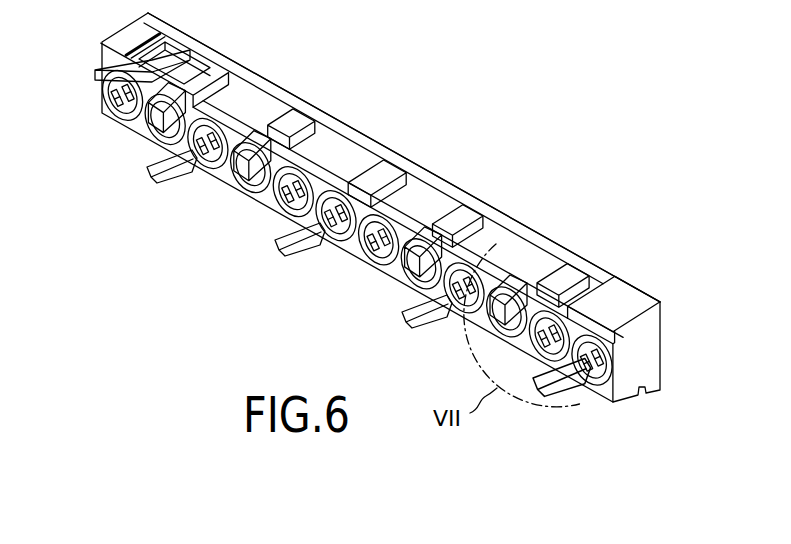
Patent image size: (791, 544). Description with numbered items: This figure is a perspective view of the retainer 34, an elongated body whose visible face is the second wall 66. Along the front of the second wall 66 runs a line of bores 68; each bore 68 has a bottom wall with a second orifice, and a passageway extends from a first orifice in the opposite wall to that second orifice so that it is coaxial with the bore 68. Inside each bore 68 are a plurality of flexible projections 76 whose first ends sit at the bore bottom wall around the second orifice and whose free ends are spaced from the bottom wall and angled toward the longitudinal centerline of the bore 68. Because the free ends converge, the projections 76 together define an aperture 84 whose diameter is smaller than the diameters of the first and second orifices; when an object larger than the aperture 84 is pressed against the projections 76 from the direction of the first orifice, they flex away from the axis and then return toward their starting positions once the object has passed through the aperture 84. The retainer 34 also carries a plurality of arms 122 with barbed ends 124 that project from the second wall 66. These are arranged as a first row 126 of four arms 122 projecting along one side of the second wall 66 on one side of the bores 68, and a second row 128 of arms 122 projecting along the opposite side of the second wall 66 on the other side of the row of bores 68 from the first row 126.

The retainer 34 is at (411, 207).
The second wall 66 is at (612, 345).
The bore 68 is at (590, 378).
The flexible projections 76 is at (593, 373).
The aperture 84 is at (597, 377).
The arms 122 is at (553, 268).
The barbed ends 124 is at (512, 287).
The first row 126 is at (606, 251).
The second row 128 is at (126, 153).